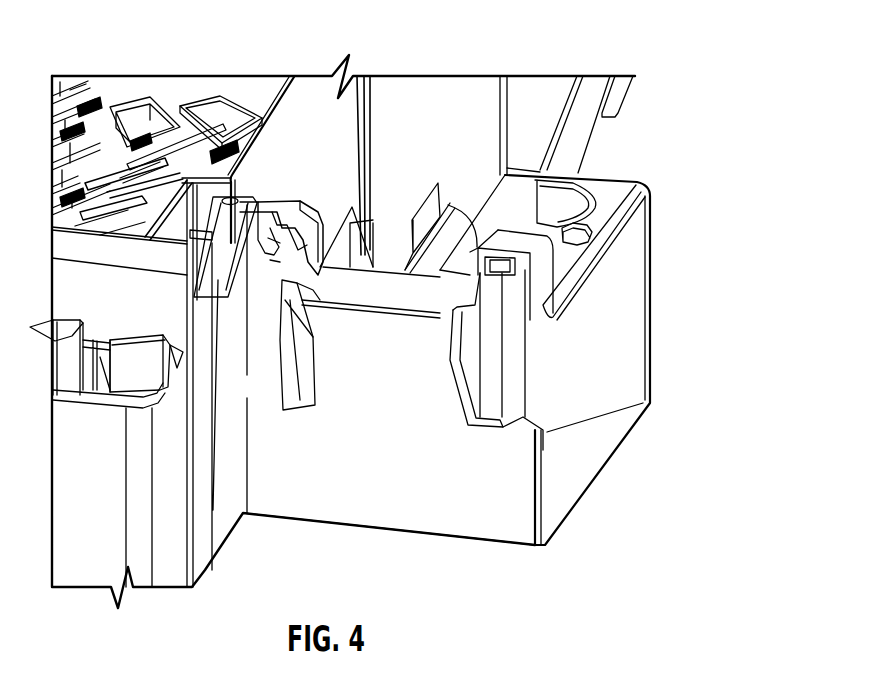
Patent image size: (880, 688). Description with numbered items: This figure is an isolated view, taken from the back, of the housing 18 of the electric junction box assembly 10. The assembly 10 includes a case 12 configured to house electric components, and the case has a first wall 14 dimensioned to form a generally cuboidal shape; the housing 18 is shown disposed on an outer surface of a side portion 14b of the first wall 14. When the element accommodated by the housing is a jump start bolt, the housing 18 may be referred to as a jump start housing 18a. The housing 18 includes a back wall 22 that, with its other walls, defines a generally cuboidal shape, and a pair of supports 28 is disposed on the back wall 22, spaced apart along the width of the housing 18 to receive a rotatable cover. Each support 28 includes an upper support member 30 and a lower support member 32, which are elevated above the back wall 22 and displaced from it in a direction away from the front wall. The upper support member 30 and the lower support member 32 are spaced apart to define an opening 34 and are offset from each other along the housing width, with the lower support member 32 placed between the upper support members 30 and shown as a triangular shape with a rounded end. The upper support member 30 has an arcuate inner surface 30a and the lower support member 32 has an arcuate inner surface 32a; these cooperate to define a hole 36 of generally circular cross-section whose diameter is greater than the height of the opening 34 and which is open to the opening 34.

The electric junction box assembly 10 is at (574, 38).
The case 12 is at (450, 87).
The first wall 14 is at (400, 88).
The side portion 14b is at (438, 148).
The housing 18 is at (672, 240).
The jump start housing 18a is at (441, 228).
The back wall 22 is at (497, 507).
The support 28 is at (467, 437).
The upper support member 30 is at (283, 213).
The arcuate inner surface 30a is at (323, 263).
The lower support member 32 is at (298, 323).
The arcuate inner surface 32a is at (320, 300).
The opening 34 is at (274, 289).
The hole 36 is at (278, 272).